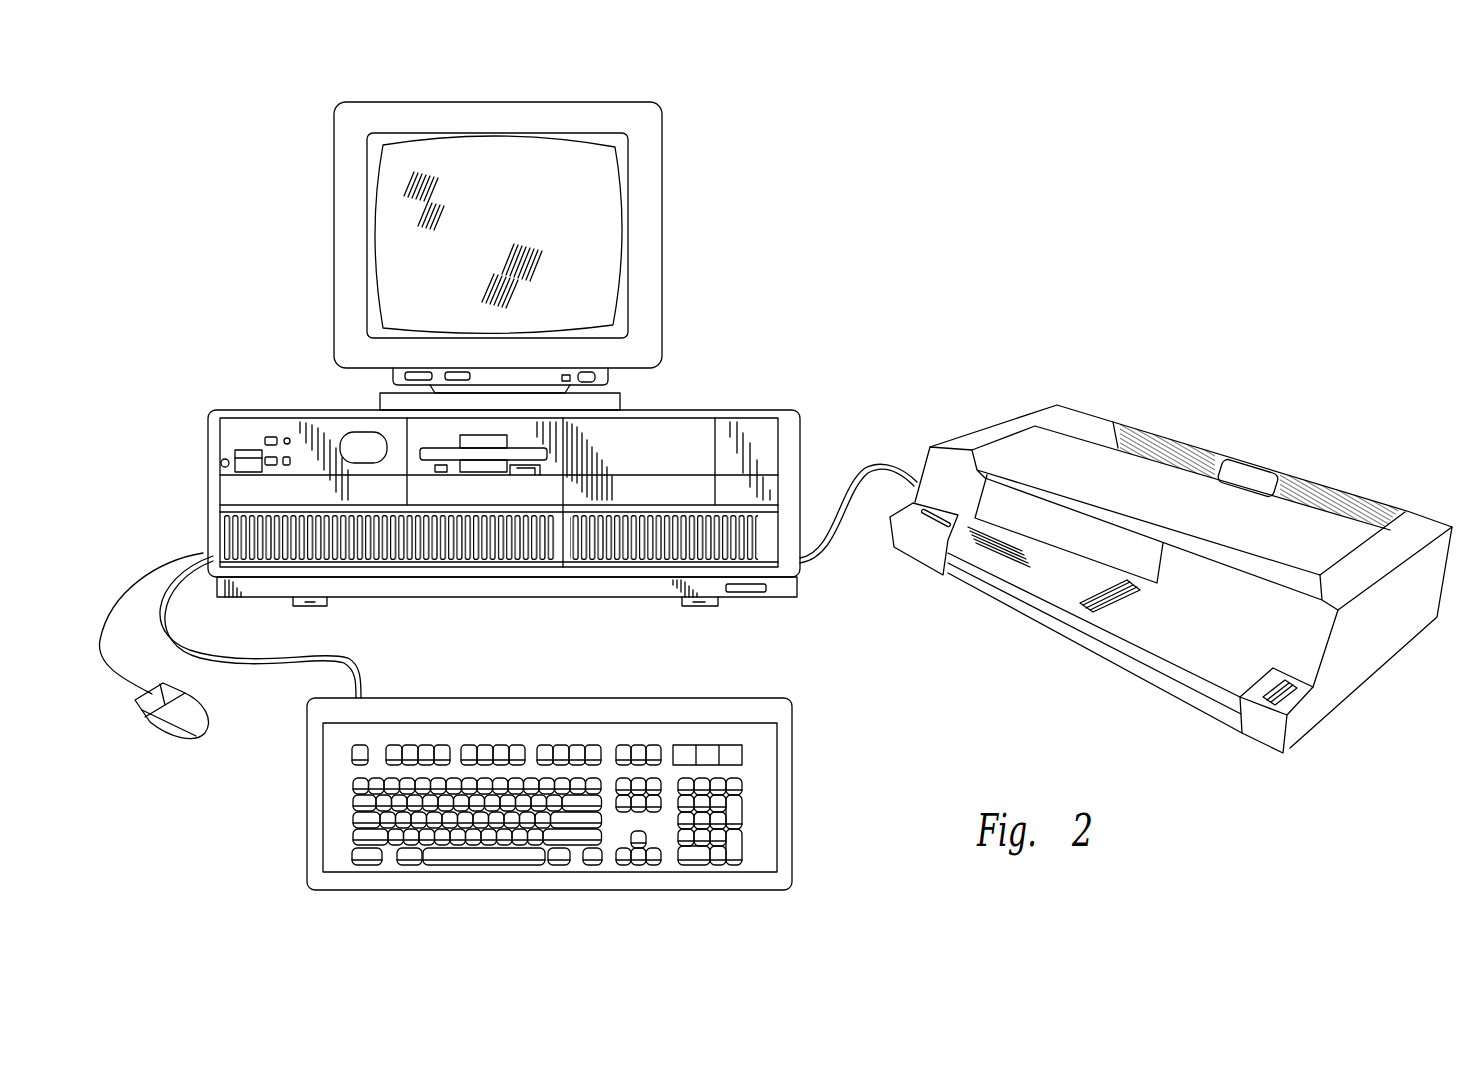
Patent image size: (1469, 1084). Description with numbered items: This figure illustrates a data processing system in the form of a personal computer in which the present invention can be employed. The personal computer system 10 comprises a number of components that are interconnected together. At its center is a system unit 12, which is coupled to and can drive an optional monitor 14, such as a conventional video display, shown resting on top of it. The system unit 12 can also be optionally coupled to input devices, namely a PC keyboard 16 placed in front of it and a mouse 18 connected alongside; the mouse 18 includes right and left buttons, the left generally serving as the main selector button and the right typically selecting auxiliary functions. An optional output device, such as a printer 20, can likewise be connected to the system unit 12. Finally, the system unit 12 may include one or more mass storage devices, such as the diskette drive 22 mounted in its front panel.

The personal computer system 10 is at (881, 221).
The system unit 12 is at (504, 485).
The monitor 14 is at (673, 268).
The PC keyboard 16 is at (665, 691).
The mouse 18 is at (150, 722).
The printer 20 is at (990, 418).
The diskette drive 22 is at (493, 464).